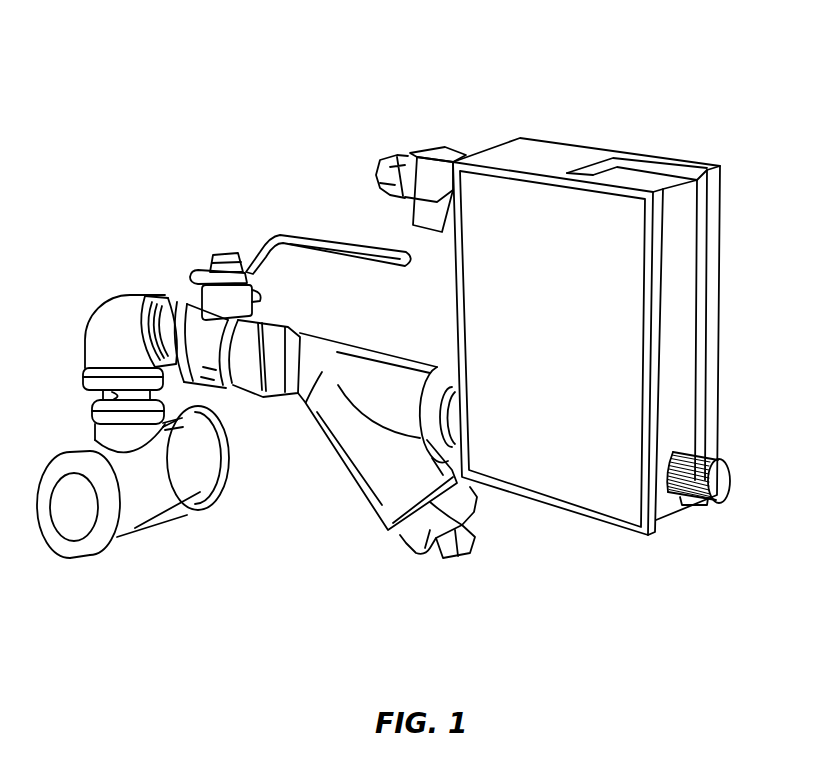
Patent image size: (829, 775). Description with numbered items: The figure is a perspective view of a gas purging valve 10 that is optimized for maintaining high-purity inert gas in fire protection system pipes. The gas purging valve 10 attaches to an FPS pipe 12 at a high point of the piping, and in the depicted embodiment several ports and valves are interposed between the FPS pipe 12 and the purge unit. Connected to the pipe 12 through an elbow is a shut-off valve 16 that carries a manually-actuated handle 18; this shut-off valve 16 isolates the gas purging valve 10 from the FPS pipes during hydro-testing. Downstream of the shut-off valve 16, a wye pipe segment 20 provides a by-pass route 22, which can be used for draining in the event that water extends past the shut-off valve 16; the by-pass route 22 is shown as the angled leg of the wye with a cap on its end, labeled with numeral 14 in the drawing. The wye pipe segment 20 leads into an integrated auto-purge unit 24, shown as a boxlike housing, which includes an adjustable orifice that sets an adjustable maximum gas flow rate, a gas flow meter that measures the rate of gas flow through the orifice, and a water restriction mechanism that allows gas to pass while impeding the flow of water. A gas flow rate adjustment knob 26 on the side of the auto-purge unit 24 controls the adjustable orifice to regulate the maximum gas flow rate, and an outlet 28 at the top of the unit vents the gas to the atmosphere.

The gas purging valve 10 is at (693, 90).
The FPS pipe 12 is at (153, 493).
The strainer body 14 is at (450, 425).
The shut-off valve 16 is at (207, 345).
The manually-actuated handle 18 is at (342, 245).
The wye pipe segment 20 is at (378, 386).
The by-pass route 22 is at (433, 528).
The integrated auto-purge unit 24 is at (590, 268).
The gas flow rate adjustment knob 26 is at (732, 478).
The outlet 28 is at (420, 163).